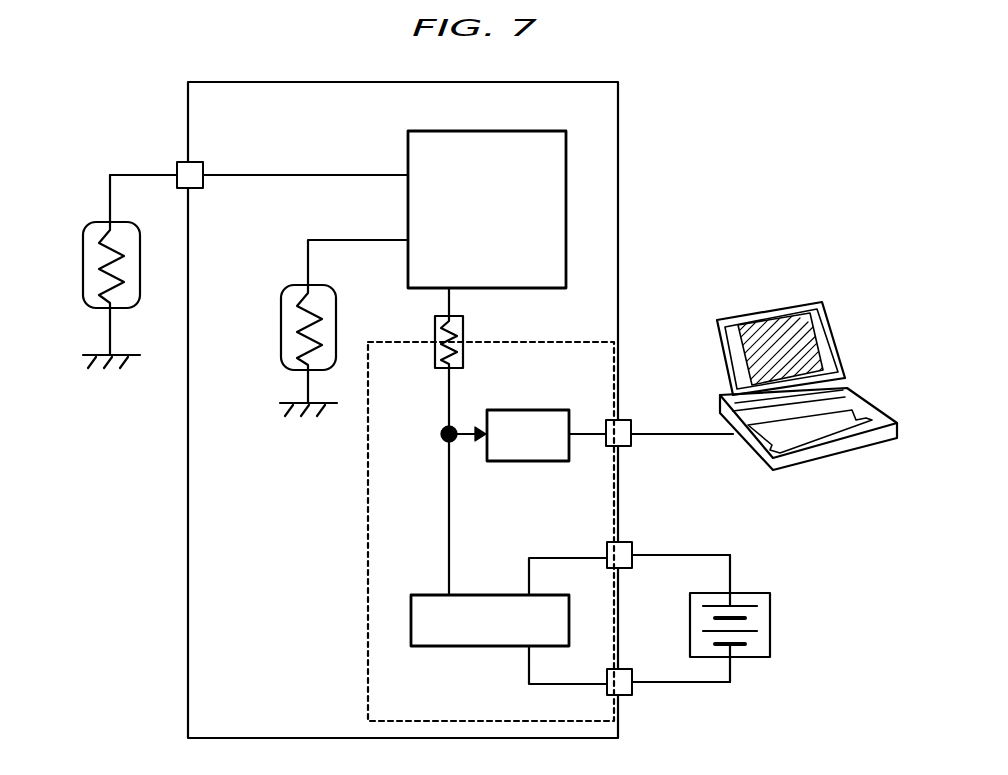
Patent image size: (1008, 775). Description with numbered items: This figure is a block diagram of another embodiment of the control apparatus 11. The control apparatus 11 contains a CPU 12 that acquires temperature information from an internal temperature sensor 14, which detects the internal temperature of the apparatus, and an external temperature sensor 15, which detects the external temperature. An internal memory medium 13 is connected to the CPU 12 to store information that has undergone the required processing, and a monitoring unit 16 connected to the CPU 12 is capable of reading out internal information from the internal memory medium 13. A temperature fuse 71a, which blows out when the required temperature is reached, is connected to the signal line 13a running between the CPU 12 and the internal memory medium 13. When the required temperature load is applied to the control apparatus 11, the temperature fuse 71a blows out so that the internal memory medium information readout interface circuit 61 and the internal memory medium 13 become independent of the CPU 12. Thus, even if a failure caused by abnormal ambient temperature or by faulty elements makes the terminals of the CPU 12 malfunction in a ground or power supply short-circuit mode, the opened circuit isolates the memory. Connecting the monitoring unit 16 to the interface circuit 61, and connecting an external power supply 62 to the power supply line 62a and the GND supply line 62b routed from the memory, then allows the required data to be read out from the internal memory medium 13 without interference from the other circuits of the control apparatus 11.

The control apparatus 11 is at (333, 82).
The CPU 12 is at (472, 131).
The internal memory medium 13 is at (448, 647).
The signal line 13a is at (448, 542).
The internal temperature sensor 14 is at (300, 287).
The external temperature sensor 15 is at (95, 224).
The monitoring unit 16 is at (772, 308).
The internal memory medium information readout interface circuit 61 is at (522, 461).
The external power supply 62 is at (753, 593).
The power supply line 62a is at (658, 555).
The GND supply line 62b is at (675, 684).
The temperature fuse 71a is at (463, 326).